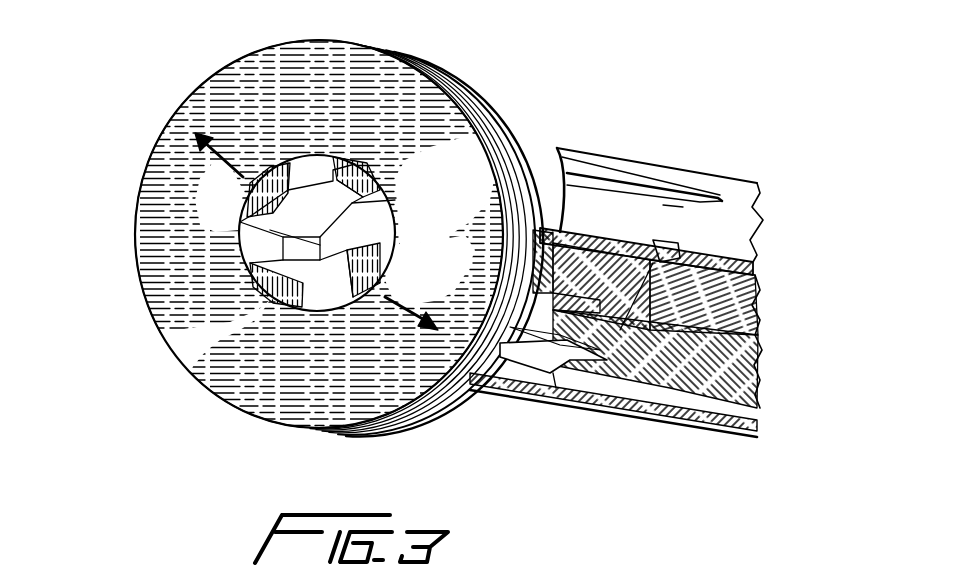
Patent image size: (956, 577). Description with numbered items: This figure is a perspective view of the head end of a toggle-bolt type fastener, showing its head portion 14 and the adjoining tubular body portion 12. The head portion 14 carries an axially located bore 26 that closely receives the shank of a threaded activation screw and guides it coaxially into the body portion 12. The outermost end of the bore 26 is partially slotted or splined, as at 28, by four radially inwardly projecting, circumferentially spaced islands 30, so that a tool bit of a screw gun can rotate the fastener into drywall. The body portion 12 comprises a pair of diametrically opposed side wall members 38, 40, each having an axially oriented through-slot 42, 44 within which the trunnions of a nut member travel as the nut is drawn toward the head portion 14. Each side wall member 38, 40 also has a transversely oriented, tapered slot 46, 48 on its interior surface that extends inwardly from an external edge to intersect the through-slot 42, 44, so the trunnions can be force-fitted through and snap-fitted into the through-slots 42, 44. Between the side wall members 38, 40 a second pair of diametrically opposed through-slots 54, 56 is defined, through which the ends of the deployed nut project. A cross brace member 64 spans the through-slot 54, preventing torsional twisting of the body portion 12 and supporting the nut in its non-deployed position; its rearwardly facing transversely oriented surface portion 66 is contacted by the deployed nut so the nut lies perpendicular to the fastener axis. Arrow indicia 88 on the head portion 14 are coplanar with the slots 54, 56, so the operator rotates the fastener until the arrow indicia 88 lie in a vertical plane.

The body portion 12 is at (660, 164).
The head portion 14 is at (257, 247).
The axially located bore 26 is at (395, 180).
The slotted or splined portion 28 is at (297, 158).
The islands 30 is at (372, 178).
The side wall member 38 is at (727, 213).
The side wall member 40 is at (727, 437).
The axially oriented through-slot 42 is at (602, 172).
The axially oriented through-slot 44 is at (610, 402).
The transversely oriented slot 46 is at (757, 333).
The transversely oriented slot 48 is at (558, 388).
The through-slot 54 is at (530, 272).
The through-slot 56 is at (757, 255).
The cross brace member 64 is at (757, 383).
The transversely oriented surface portion 66 is at (498, 376).
The arrow indicia 88 is at (238, 165).